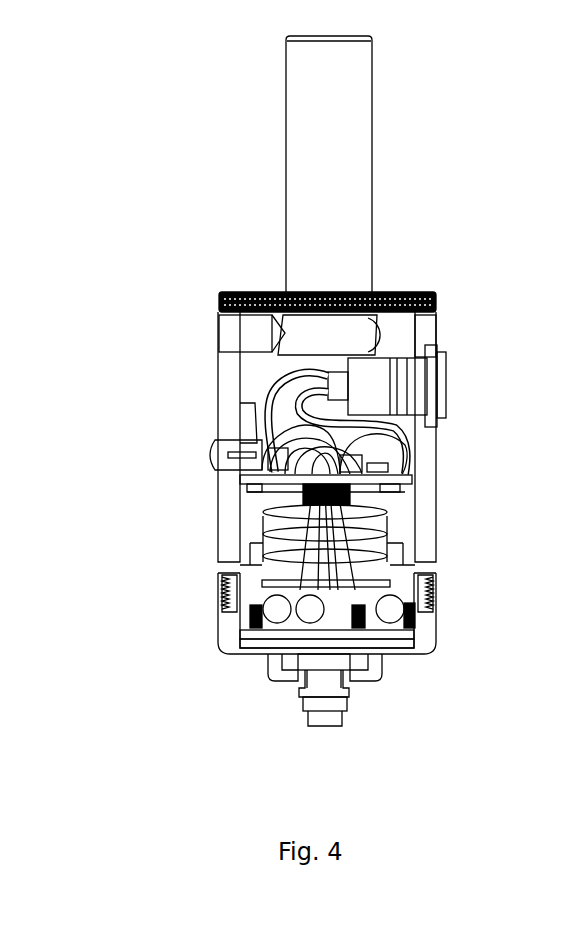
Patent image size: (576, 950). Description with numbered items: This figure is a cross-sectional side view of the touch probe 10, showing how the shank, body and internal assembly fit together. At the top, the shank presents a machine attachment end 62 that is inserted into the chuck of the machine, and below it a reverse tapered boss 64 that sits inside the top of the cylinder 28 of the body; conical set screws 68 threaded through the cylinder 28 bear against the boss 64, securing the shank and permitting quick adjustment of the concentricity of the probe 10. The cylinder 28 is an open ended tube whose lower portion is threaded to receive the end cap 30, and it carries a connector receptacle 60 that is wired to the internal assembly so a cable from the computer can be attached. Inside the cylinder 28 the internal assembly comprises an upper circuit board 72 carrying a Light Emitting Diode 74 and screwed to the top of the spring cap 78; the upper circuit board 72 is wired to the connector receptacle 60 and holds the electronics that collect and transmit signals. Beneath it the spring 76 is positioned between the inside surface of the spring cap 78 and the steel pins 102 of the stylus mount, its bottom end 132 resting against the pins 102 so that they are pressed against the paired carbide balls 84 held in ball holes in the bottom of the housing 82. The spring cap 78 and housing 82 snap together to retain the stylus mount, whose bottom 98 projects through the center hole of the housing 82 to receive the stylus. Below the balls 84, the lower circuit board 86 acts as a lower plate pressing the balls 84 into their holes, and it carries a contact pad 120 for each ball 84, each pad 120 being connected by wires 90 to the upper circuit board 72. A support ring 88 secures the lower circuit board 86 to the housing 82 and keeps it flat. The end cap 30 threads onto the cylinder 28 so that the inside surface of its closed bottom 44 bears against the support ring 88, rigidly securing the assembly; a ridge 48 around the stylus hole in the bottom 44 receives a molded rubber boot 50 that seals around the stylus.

The touch probe 10 is at (153, 145).
The machine attachment end 62 is at (376, 230).
The conical set screws 68 is at (238, 320).
The reverse tapered boss 64 is at (366, 336).
The connector receptacle 60 is at (451, 370).
The Light Emitting Diode (LED) 74 is at (257, 440).
The cylinder 28 is at (442, 444).
The upper circuit board 72 is at (395, 483).
The spring cap 78 is at (398, 513).
The spring 76 is at (407, 534).
The wires 90 is at (273, 565).
The bottom end of the spring 132 is at (262, 585).
The housing 82 is at (412, 582).
The steel pins 102 is at (264, 604).
The end cap 30 is at (435, 637).
The lower circuit board 86 is at (246, 639).
The carbide balls 84 is at (425, 648).
The support ring 88 is at (256, 648).
The closed bottom 44 is at (405, 664).
The ridge 48 is at (366, 694).
The molded rubber boot 50 is at (393, 677).
The contact pad 120 is at (307, 625).
The bottom of the stylus mount 98 is at (340, 732).